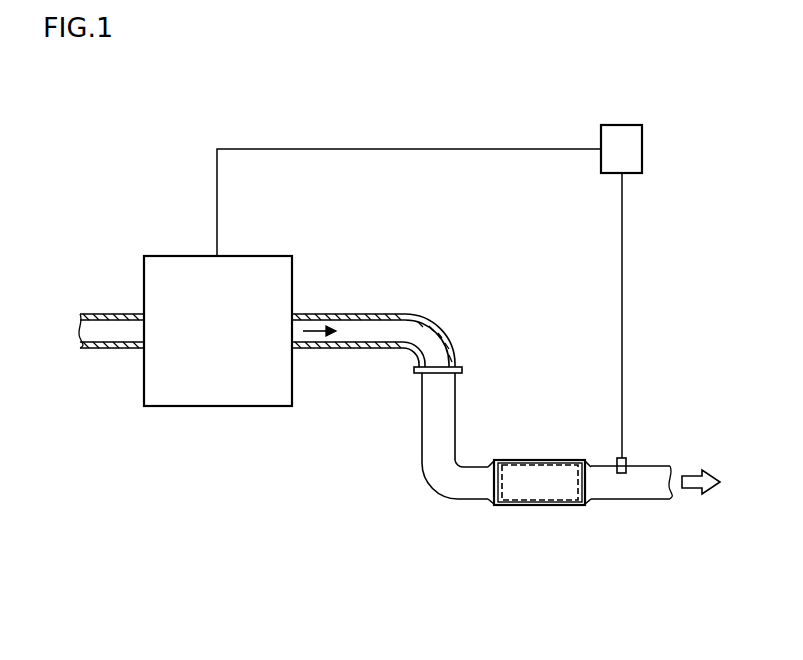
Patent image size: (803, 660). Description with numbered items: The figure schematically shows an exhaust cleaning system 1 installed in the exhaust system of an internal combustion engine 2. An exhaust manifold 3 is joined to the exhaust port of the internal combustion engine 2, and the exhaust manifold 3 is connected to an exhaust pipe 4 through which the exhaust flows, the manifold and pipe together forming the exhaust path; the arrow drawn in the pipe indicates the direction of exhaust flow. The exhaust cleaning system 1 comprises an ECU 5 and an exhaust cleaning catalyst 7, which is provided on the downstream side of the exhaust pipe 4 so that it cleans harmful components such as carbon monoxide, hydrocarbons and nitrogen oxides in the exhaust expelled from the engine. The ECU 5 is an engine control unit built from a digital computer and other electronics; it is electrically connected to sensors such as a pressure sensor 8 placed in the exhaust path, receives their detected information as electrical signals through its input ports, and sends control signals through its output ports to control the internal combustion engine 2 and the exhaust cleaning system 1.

The exhaust cleaning system 1 is at (516, 506).
The internal combustion engine 2 is at (276, 246).
The exhaust manifold 3 is at (378, 313).
The exhaust pipe 4 is at (422, 418).
The ECU 5 is at (642, 139).
The exhaust cleaning catalyst 7 is at (560, 465).
The pressure sensor 8 is at (622, 473).